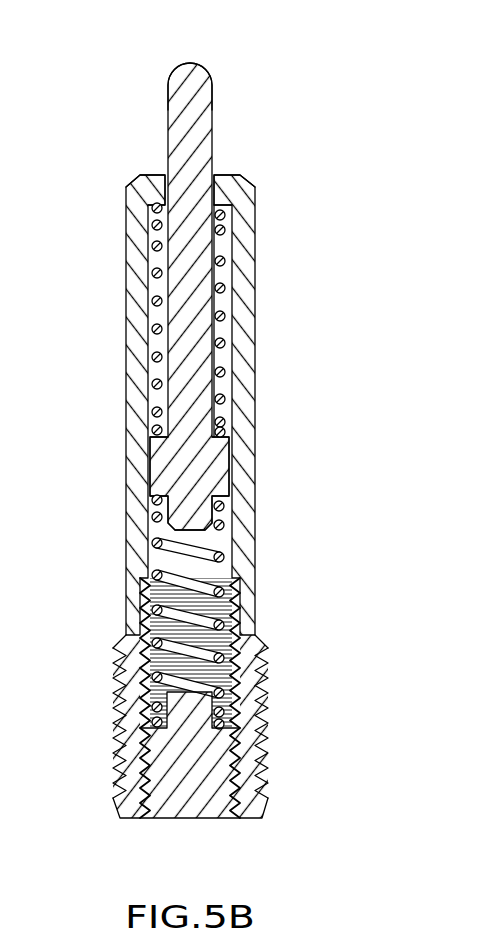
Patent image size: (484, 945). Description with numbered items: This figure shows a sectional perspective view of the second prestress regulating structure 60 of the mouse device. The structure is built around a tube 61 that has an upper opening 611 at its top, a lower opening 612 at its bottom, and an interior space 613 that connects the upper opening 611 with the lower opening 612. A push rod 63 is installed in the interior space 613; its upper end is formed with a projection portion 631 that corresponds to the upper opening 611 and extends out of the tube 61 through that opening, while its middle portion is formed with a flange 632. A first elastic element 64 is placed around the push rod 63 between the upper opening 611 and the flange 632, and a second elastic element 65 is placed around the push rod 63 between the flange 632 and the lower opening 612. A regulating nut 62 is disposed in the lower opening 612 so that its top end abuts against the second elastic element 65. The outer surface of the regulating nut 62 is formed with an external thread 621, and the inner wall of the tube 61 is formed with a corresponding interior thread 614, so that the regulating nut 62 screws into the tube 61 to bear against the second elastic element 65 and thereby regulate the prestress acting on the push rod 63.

The probe 60 is at (131, 44).
The tube 61 is at (243, 407).
The upper opening 611 is at (215, 185).
The lower opening 612 is at (140, 818).
The interior space 613 is at (217, 355).
The interior thread 614 is at (243, 613).
The regulating nut 62 is at (217, 760).
The external thread 621 is at (235, 780).
The push rod 63 is at (193, 305).
The projection portion 631 is at (200, 77).
The flange 632 is at (220, 467).
The first elastic element 64 is at (222, 257).
The second elastic element 65 is at (227, 557).